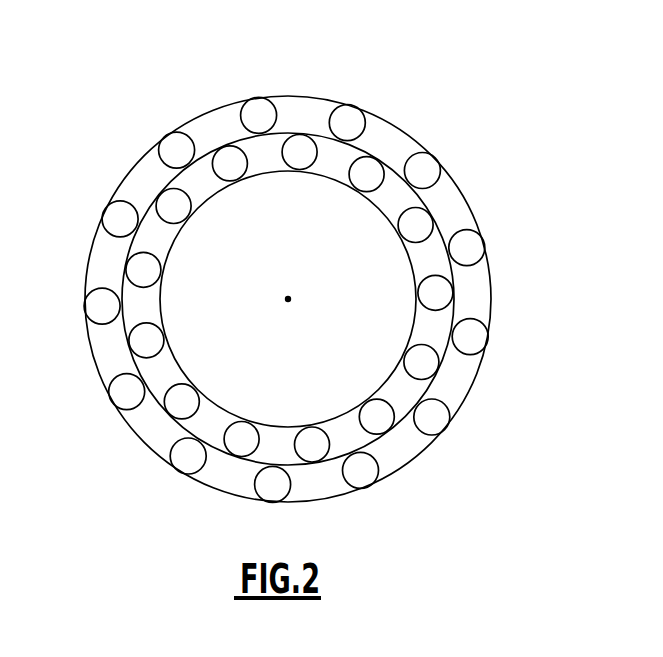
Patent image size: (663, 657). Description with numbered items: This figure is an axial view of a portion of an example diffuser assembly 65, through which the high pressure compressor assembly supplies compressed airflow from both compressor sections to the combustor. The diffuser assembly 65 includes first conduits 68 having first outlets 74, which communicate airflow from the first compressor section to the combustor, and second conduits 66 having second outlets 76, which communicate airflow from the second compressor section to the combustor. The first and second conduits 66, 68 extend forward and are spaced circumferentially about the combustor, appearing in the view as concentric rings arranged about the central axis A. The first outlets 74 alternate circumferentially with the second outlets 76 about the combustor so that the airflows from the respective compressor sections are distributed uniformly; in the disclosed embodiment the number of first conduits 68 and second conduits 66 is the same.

The diffuser assembly 65 is at (361, 52).
The second conduits 66 is at (440, 204).
The first conduits 68 is at (482, 211).
The first outlets 74 is at (256, 114).
The second outlets 76 is at (304, 160).
The axis A is at (288, 303).